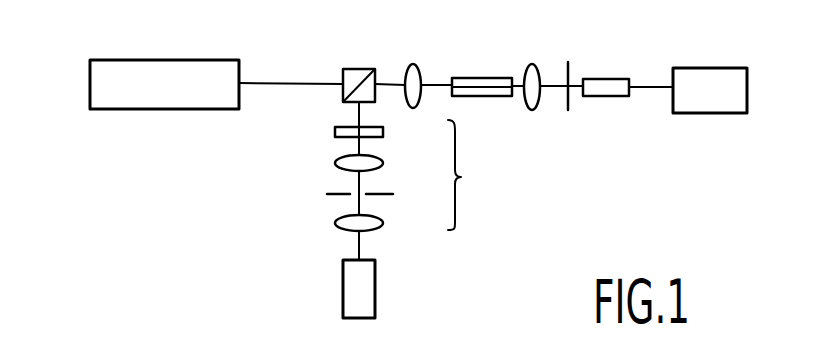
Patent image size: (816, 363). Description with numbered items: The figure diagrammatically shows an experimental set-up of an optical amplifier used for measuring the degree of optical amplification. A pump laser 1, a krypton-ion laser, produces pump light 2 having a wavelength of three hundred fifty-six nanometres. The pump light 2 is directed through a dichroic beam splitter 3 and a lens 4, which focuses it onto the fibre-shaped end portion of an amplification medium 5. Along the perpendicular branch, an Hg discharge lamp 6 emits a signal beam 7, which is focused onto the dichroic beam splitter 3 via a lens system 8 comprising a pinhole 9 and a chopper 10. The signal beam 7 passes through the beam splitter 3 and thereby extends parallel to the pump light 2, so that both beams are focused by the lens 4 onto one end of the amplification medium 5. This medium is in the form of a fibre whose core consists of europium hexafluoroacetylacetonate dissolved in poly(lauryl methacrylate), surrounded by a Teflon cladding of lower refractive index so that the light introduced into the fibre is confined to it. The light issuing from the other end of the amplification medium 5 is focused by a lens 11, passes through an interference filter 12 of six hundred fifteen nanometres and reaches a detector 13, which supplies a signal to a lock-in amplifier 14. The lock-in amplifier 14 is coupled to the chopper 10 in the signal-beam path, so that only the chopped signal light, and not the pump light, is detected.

The pump laser 1 is at (157, 70).
The pump light 2 is at (278, 80).
The dichroic beam splitter 3 is at (352, 70).
The lens 4 is at (415, 66).
The amplification medium 5 is at (467, 78).
The Hg discharge lamp 6 is at (375, 296).
The signal beam 7 is at (360, 249).
The lens system 8 is at (405, 175).
The pinhole 9 is at (392, 193).
The chopper 10 is at (383, 132).
The lens 11 is at (537, 65).
The interference filter 12 is at (564, 72).
The detector 13 is at (612, 78).
The lock-in amplifier 14 is at (704, 68).